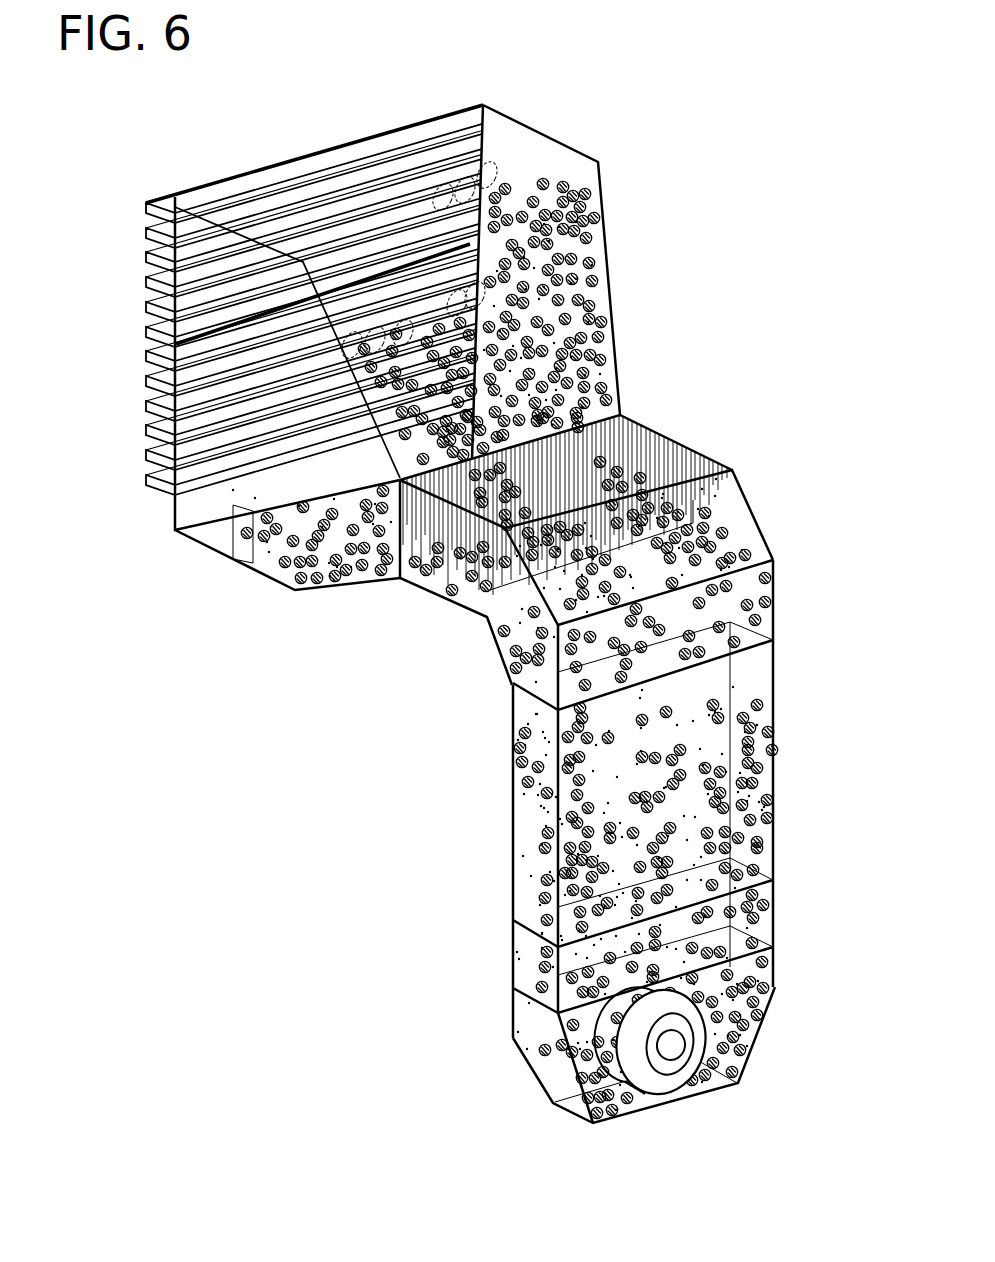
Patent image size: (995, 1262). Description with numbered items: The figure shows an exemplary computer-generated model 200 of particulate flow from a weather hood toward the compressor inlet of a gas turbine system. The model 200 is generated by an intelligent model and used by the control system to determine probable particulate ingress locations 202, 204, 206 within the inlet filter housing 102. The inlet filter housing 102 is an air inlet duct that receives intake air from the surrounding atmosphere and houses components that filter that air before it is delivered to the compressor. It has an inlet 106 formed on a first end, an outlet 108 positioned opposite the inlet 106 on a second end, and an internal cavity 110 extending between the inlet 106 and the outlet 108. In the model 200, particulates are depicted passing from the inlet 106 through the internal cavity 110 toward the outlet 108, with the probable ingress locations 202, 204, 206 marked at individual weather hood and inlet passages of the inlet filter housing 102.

The inlet filter housing 102 is at (192, 509).
The inlet 106 is at (108, 346).
The outlet 108 is at (661, 1124).
The internal cavity 110 is at (355, 503).
The model 200 is at (600, 637).
The probable particulate ingress location 202 is at (517, 176).
The probable particulate ingress location 204 is at (377, 314).
The probable particulate ingress location 206 is at (445, 286).